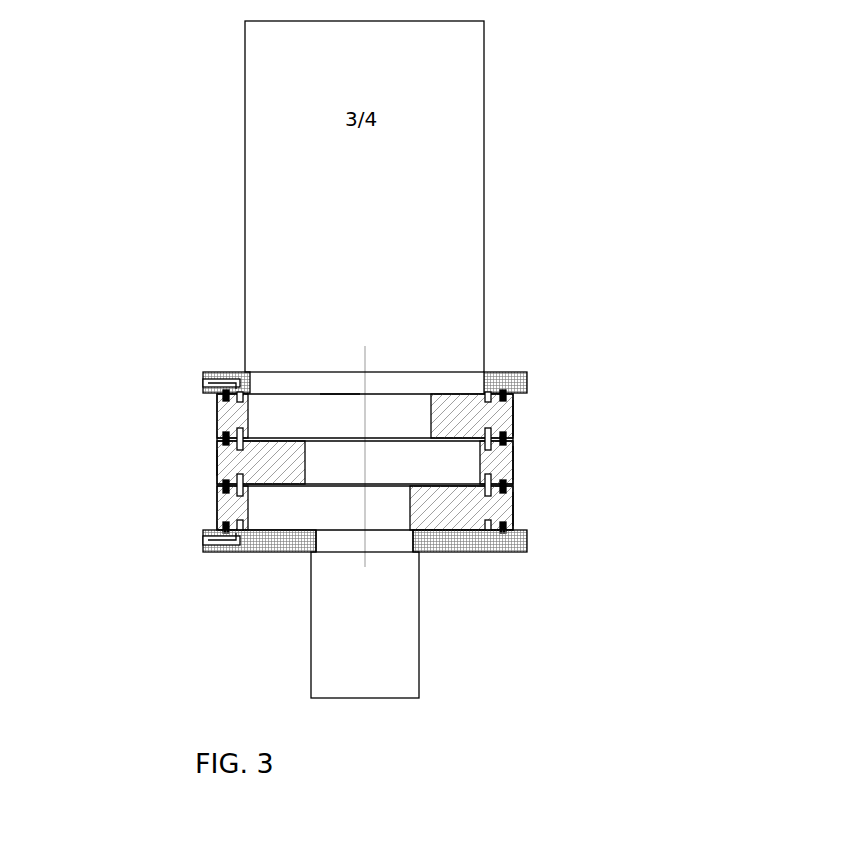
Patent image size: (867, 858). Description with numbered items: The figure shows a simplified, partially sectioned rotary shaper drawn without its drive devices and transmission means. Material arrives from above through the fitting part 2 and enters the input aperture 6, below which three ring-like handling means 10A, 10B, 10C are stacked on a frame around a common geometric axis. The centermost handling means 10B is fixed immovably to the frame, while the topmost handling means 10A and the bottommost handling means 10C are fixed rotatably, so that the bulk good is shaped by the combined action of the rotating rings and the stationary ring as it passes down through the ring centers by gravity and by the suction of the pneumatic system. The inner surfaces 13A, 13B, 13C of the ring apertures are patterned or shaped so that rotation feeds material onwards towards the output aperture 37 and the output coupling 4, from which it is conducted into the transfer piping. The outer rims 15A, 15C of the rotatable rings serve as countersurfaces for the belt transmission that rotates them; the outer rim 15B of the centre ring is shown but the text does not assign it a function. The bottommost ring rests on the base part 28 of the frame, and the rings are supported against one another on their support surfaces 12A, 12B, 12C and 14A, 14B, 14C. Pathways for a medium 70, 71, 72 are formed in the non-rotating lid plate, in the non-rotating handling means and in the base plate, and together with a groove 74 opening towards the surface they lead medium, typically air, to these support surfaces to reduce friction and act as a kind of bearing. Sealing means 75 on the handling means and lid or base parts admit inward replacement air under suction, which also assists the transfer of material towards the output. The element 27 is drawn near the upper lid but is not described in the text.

The fitting part 2 is at (257, 316).
The input aperture 6 is at (338, 392).
The upper flange 27 is at (500, 371).
The pathway of the medium 70 is at (212, 381).
The support surface 12A is at (222, 398).
The support surface 14A is at (236, 437).
The groove 74 is at (222, 447).
The pathway of the medium 71 is at (220, 462).
The support surface 14B is at (236, 484).
The sealing means 75 is at (222, 488).
The pathway of the medium 72 is at (207, 543).
The base part of the frame part 28 is at (265, 545).
The output aperture 37 is at (323, 540).
The output coupling 4 is at (415, 651).
The ring-like handling means 10A is at (497, 418).
The ring-like handling means 10B is at (508, 462).
The ring-like handling means 10C is at (507, 510).
The inner surface 13A is at (431, 410).
The inner surface 13B is at (480, 455).
The inner surface 13C is at (410, 497).
The outer rim 15A is at (513, 425).
The second plate side 15B is at (515, 452).
The outer rim 15C is at (513, 500).
The support surface 12B is at (507, 437).
The support surface 12C is at (507, 487).
The support surface 14C is at (525, 533).